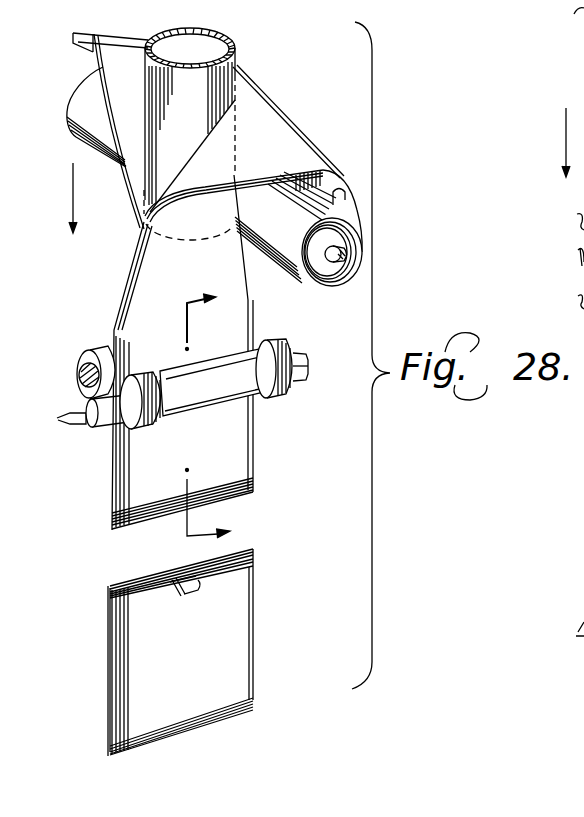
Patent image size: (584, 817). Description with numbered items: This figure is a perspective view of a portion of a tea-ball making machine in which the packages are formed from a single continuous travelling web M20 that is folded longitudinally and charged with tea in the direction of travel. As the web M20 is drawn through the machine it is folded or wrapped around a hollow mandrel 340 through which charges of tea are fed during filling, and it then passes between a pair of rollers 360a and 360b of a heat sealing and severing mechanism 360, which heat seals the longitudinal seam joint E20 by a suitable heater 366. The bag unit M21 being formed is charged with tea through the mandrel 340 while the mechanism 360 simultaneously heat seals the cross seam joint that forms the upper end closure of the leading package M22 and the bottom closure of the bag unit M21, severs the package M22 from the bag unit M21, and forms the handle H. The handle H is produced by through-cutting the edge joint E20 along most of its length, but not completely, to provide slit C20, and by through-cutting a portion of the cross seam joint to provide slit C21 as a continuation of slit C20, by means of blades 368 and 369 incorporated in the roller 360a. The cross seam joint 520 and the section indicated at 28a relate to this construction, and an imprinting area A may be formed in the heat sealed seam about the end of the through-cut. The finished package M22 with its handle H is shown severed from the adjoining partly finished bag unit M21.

The hollow mandrel 340 is at (207, 92).
The single continuous travelling web M20 is at (246, 160).
The section line 28a is at (226, 411).
The blade 369 is at (233, 345).
The heat sealing and severing mechanism 360 is at (293, 338).
The roller 360b is at (80, 348).
The roller 360a is at (283, 389).
The bag unit M21 is at (228, 448).
The heater 366 is at (125, 424).
The blade 368 is at (153, 429).
The longitudinal seam joint E20 is at (117, 509).
The bottom seam 520 is at (255, 486).
The slit C21 is at (145, 590).
The imprinting area A is at (182, 590).
The leading package M22 is at (223, 659).
The handle H is at (110, 642).
The slit C20 is at (126, 712).